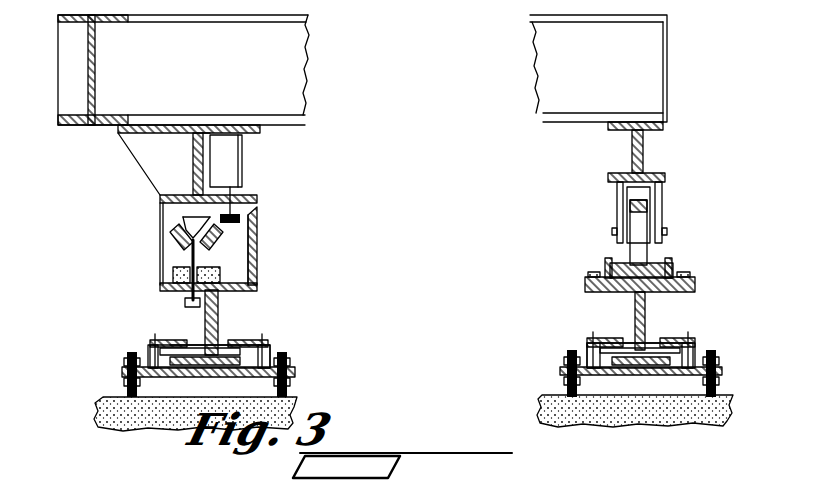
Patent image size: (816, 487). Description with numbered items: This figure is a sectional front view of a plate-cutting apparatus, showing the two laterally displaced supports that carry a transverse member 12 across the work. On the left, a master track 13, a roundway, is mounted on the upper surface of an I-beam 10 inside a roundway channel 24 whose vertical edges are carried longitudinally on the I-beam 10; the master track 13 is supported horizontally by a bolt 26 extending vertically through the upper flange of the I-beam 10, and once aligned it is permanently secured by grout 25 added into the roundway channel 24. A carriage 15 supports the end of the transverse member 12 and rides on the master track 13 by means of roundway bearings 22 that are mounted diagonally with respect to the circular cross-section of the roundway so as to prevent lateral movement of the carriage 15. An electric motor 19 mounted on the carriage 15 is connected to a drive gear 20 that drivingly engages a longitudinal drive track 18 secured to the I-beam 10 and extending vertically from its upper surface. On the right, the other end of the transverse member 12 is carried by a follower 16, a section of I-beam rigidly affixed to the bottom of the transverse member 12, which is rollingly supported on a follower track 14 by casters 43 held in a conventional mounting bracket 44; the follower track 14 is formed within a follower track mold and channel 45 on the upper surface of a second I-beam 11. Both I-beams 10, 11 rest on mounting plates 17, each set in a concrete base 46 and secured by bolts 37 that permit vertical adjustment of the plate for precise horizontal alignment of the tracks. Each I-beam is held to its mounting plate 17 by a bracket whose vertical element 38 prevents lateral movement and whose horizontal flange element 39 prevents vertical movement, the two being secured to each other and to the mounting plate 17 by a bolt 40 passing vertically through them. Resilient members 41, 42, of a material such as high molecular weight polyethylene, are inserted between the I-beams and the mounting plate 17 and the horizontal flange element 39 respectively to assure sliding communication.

The I-beam 10 is at (218, 326).
The I-beam 11 is at (646, 309).
The transverse member 12 is at (298, 36).
The master track 13 is at (185, 262).
The follower track 14 is at (617, 265).
The carriage 15 is at (150, 152).
The follower 16 is at (644, 148).
The mounting plate 17 is at (290, 375).
The longitudinal drive track 18 is at (257, 236).
The electric motor 19 is at (232, 152).
The drive gear 20 is at (256, 218).
The roundway bearing 22 is at (162, 224).
The roundway channel 24 is at (176, 275).
The grout 25 is at (184, 300).
The bolt 26 is at (250, 298).
The bolt 37 is at (128, 356).
The vertical element 38 is at (148, 350).
The horizontal flange element 39 is at (160, 340).
The bolt 40 is at (148, 340).
The resilient member 41 is at (187, 373).
The resilient member 42 is at (206, 345).
The caster 43 is at (640, 248).
The mounting bracket 44 is at (662, 202).
The follower track mold and channel 45 is at (607, 267).
The concrete base 46 is at (208, 420).